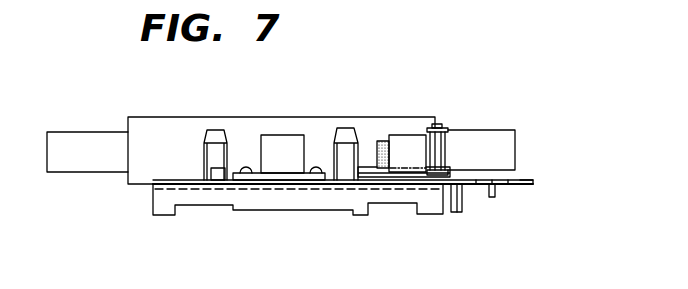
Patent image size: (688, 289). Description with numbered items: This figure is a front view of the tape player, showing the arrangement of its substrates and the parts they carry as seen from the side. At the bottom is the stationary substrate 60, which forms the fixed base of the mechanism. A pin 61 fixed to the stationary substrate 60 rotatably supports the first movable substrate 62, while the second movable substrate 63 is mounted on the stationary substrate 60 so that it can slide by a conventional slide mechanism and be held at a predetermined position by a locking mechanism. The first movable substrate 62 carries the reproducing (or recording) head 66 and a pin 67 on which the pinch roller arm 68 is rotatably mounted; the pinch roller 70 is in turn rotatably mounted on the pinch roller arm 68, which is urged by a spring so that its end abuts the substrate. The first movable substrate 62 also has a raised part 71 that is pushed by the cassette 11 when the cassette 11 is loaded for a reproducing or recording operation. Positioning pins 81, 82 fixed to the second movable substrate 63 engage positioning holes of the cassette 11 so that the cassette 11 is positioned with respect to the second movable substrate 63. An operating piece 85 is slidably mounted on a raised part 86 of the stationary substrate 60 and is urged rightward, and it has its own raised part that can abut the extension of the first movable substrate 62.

The cassette 11 is at (517, 135).
The stationary substrate 60 is at (388, 197).
The pin 61 is at (461, 206).
The first movable substrate 62 is at (304, 183).
The second movable substrate 63 is at (508, 180).
The reproducing head 66 is at (275, 137).
The pin 67 is at (448, 150).
The pinch roller arm 68 is at (413, 136).
The pinch roller 70 is at (383, 142).
The raised part 71 is at (219, 178).
The positioning pin 81 is at (205, 152).
The positioning pin 82 is at (333, 153).
The operating piece 85 is at (532, 186).
The raised part 86 is at (494, 197).